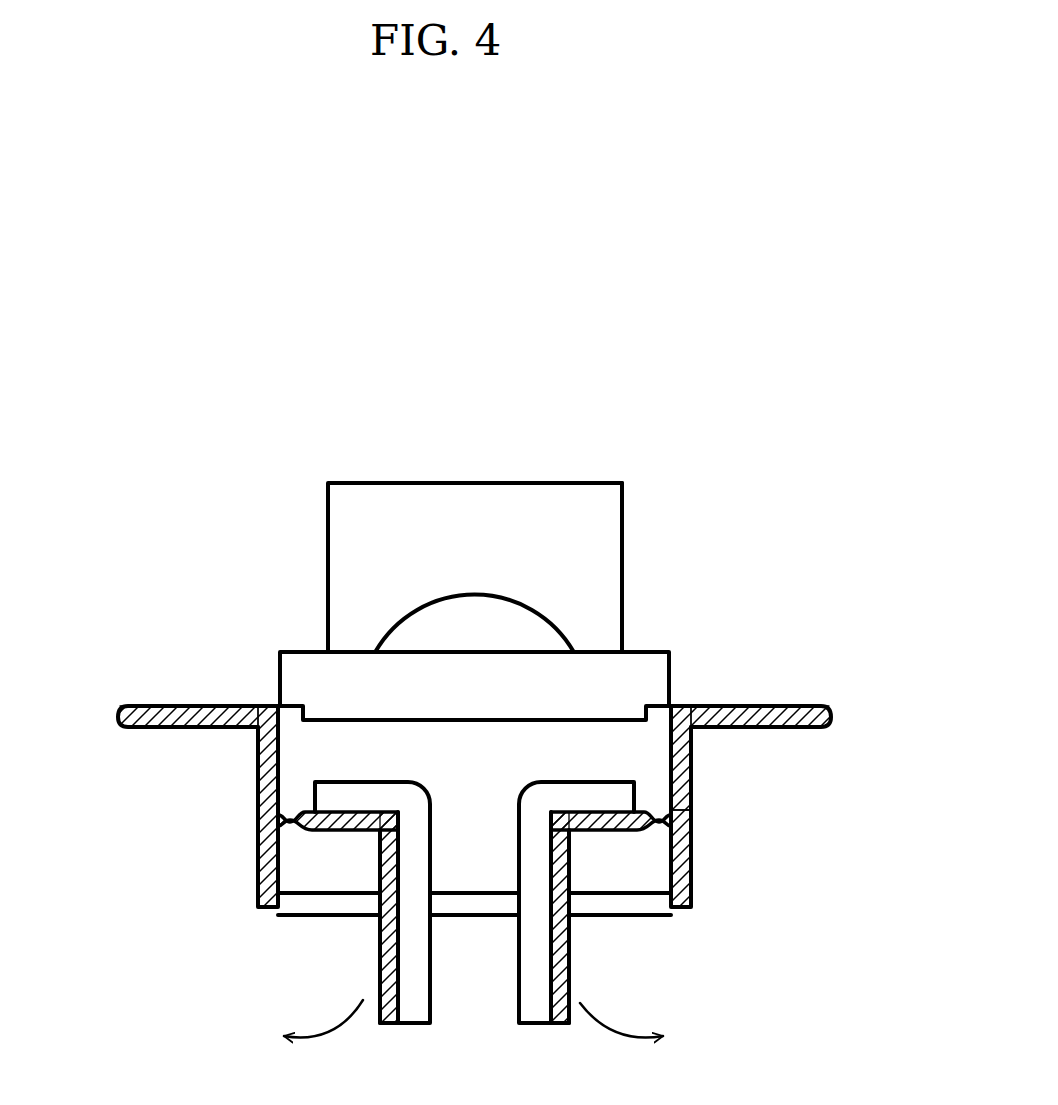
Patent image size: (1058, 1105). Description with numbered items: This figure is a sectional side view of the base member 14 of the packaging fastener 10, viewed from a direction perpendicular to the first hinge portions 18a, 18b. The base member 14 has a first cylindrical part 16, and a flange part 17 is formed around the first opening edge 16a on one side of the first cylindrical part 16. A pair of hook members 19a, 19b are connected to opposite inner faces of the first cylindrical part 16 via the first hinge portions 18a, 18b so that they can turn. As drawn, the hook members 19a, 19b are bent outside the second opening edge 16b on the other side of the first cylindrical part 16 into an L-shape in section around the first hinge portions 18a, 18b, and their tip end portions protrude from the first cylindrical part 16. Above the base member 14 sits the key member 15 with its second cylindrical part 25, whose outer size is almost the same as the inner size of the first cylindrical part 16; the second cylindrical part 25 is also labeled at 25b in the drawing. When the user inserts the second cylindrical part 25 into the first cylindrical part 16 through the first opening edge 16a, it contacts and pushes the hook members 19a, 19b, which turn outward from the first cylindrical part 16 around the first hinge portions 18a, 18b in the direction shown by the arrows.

The packaging fastener 10 is at (162, 550).
The base member 14 is at (716, 876).
The key member 15 is at (650, 563).
The first cylindrical part 16 is at (257, 852).
The first opening edge 16a is at (673, 705).
The second opening edge 16b is at (689, 910).
The flange part 17 is at (802, 705).
The first hinge portion 18a is at (284, 816).
The first hinge portion 18b is at (673, 787).
The hook member 19a is at (380, 937).
The hook member 19b is at (569, 947).
The second cylindrical part 25 is at (327, 545).
The top surface of holder 25b is at (623, 481).